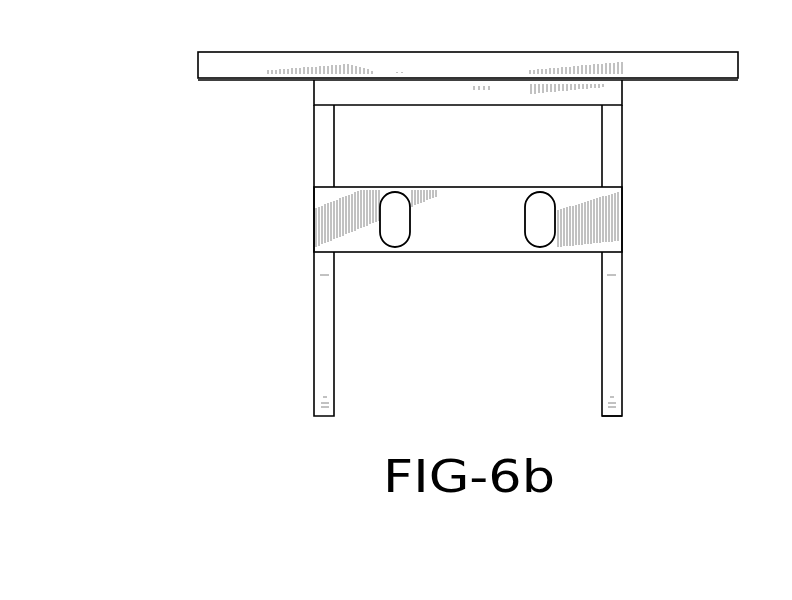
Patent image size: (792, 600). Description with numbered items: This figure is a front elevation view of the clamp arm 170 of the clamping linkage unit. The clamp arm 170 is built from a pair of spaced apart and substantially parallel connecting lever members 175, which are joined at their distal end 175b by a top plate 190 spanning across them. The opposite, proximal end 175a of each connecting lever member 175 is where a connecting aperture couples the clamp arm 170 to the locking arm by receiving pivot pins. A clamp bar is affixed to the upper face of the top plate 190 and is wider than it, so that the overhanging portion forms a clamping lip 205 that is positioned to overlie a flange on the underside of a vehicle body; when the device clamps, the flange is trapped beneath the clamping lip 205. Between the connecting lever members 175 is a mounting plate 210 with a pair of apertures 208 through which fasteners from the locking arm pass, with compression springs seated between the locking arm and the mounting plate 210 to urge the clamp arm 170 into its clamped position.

The clamp arm 170 is at (212, 37).
The clamping lip 205 is at (682, 80).
The top plate 190 is at (327, 90).
The connecting lever member 175 is at (313, 290).
The proximal end 175a is at (616, 390).
The distal end 175b is at (613, 130).
The mounting plate 210 is at (465, 207).
The aperture 208 is at (394, 246).